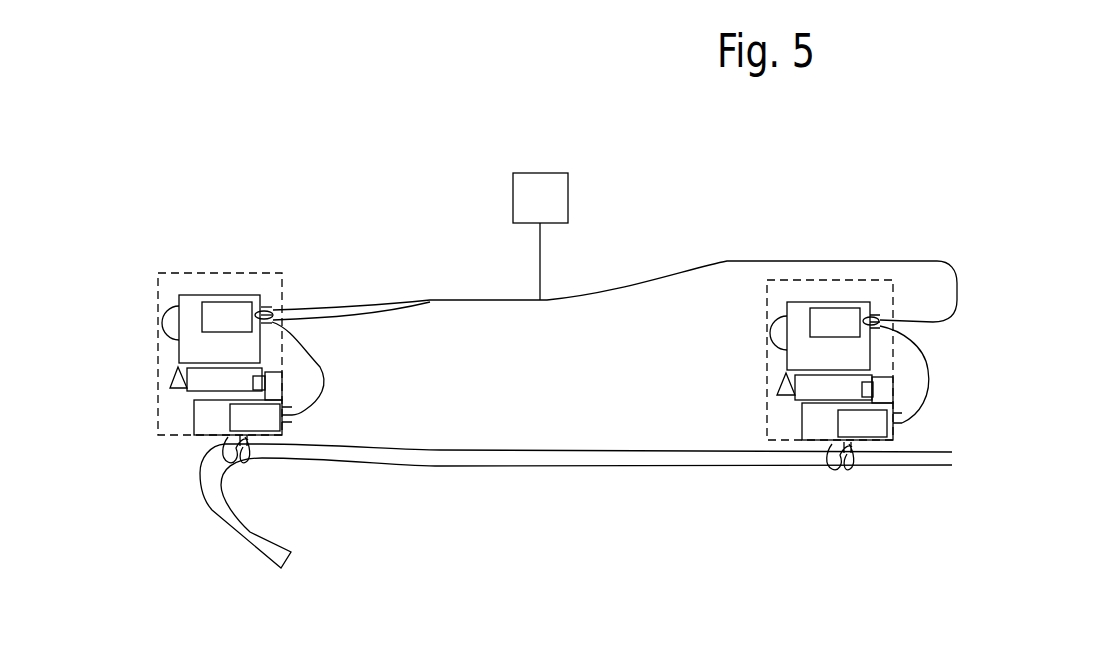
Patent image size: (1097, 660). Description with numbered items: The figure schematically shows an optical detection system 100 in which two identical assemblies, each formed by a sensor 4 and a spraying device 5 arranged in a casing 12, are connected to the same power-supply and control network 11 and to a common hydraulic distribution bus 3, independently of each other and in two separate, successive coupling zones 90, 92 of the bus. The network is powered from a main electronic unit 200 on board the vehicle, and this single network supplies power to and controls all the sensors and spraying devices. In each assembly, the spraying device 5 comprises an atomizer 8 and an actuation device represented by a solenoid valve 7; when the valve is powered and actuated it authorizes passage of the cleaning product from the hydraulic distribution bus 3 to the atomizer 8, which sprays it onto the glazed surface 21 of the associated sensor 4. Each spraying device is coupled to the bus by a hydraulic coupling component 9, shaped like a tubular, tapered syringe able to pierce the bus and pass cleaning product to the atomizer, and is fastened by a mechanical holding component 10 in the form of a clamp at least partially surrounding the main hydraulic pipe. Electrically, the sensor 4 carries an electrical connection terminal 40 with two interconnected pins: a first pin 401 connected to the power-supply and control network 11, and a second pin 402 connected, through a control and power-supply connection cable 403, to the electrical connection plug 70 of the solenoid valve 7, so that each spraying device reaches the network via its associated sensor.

The hydraulic distribution bus 3 is at (247, 533).
The sensor 4 is at (192, 275).
The spraying device 5 is at (195, 400).
The solenoid valve 7 is at (185, 435).
The atomizer 8 is at (173, 380).
The hydraulic coupling component 9 is at (256, 455).
The mechanical holding component 10 is at (215, 440).
The power-supply and control network 11 is at (430, 300).
The casing 12 is at (227, 272).
The glazed surface 21 is at (162, 325).
The electrical connection terminal 40 is at (309, 274).
The electrical connection plug 70 is at (312, 420).
The coupling zone 90 is at (295, 480).
The coupling zone 92 is at (830, 499).
The optical detection system 100 is at (125, 258).
The main electronic unit 200 is at (540, 236).
The first pin 401 is at (262, 306).
The second pin 402 is at (272, 317).
The control and power-supply connection cable 403 is at (320, 378).